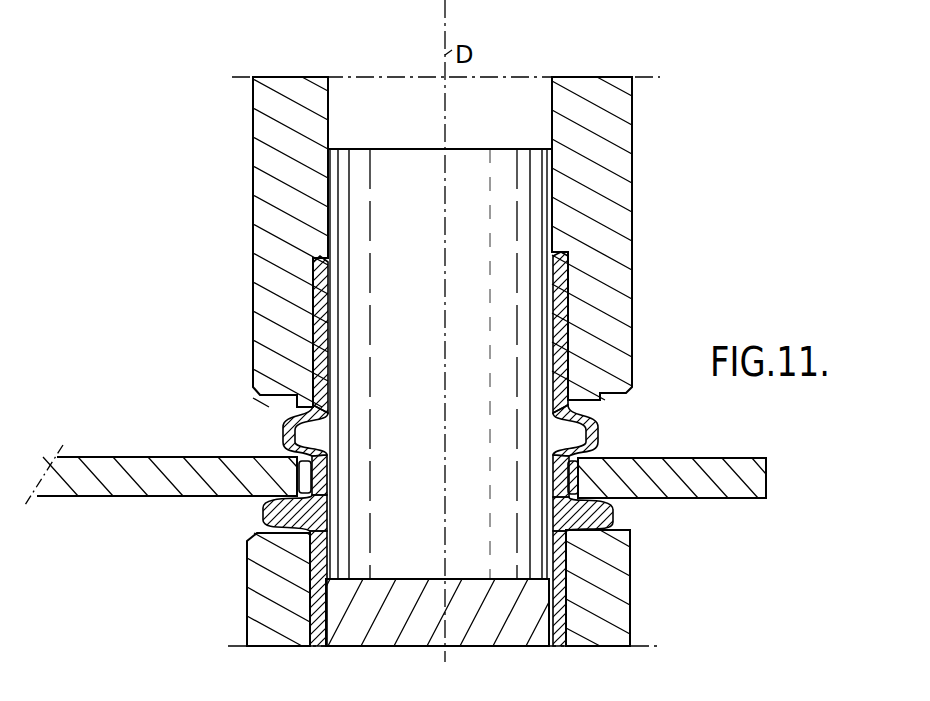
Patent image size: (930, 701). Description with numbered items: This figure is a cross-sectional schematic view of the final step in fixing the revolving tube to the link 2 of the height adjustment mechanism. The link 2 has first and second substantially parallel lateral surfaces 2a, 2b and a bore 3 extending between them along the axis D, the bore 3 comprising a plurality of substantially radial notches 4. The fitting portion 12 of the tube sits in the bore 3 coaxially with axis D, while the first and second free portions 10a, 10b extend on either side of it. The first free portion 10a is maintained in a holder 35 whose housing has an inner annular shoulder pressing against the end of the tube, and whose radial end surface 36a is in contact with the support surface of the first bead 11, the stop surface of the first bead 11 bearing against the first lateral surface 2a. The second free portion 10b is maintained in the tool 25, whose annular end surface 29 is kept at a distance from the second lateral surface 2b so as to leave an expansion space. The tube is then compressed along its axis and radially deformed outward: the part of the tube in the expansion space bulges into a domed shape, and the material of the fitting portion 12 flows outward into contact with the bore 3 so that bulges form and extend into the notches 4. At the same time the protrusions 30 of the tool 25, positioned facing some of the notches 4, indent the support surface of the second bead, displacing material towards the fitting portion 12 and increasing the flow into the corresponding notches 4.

The link 2 is at (716, 471).
The first lateral surface 2a is at (91, 497).
The second lateral surface 2b is at (103, 456).
The bore 3 is at (572, 470).
The notches 4 is at (607, 507).
The first free portion 10a is at (316, 608).
The second free portion 10b is at (563, 290).
The first bead 11 is at (597, 515).
The fitting portion 12 is at (348, 476).
The tool 25 is at (605, 148).
The end surface 29 is at (600, 407).
The protrusions 30 is at (296, 407).
The holder 35 is at (596, 600).
The end surface of the first holder 36a is at (292, 538).